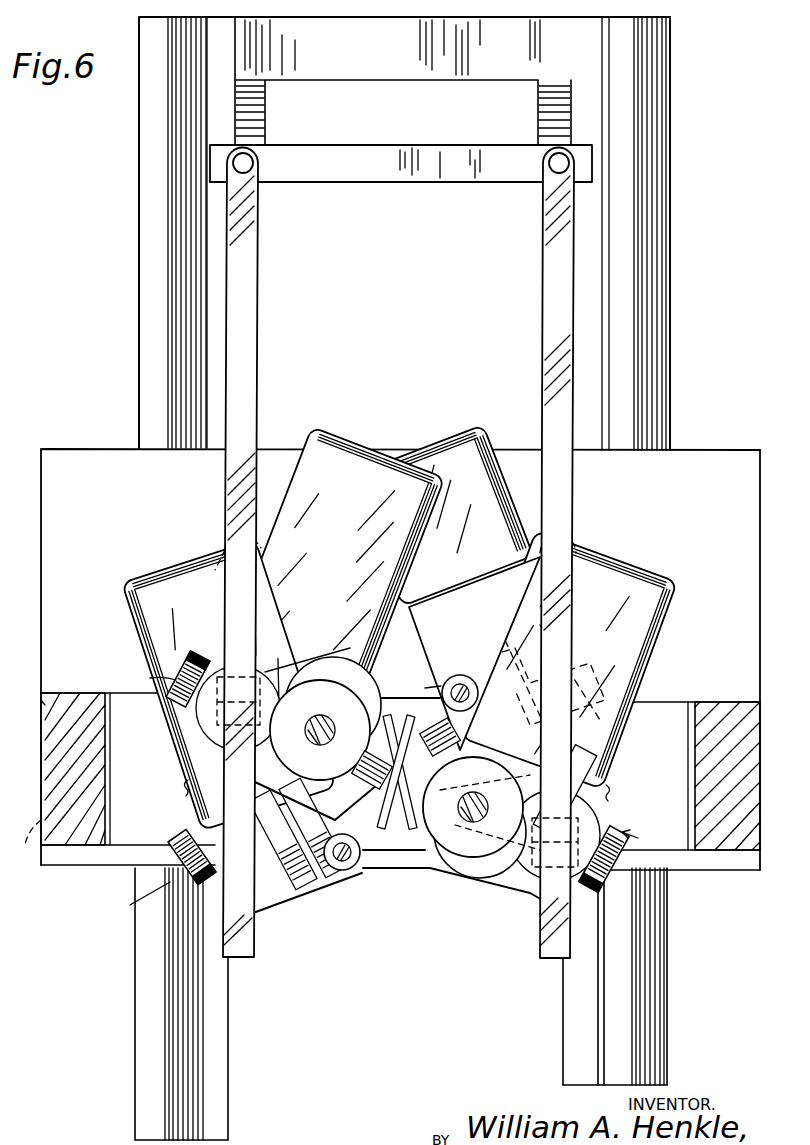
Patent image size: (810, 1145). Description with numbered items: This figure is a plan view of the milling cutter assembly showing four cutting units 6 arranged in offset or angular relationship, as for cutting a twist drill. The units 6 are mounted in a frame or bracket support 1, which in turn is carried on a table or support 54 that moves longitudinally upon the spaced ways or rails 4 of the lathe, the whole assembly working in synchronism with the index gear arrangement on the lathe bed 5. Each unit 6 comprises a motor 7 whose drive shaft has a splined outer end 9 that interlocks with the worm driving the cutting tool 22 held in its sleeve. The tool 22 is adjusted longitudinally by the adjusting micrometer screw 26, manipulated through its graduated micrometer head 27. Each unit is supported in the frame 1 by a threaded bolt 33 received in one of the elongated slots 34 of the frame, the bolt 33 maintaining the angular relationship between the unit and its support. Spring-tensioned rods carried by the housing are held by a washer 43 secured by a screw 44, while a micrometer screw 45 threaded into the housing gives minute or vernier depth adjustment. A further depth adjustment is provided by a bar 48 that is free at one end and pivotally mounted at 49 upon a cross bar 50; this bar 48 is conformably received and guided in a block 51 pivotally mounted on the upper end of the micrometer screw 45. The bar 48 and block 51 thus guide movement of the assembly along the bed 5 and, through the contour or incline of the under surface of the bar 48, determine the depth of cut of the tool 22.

The frame or bracket support 1 is at (33, 686).
The ways or rails 4 is at (623, 228).
The bed 5 is at (660, 337).
The units 6 is at (181, 787).
The motor 7 is at (432, 452).
The splined outer end 9 is at (457, 787).
The cutting tool 22 is at (397, 835).
The adjusting micrometer screw 26 is at (177, 657).
The micrometer head 27 is at (382, 794).
The threaded bolt 33 is at (405, 767).
The elongated slots 34 is at (23, 859).
The washer 43 is at (365, 897).
The screw 44 is at (459, 690).
The micrometer screw 45 is at (292, 670).
The bar 48 is at (237, 358).
The pivot 49 is at (250, 160).
The cross bar 50 is at (385, 170).
The block 51 is at (268, 672).
The table or support 54 is at (720, 464).